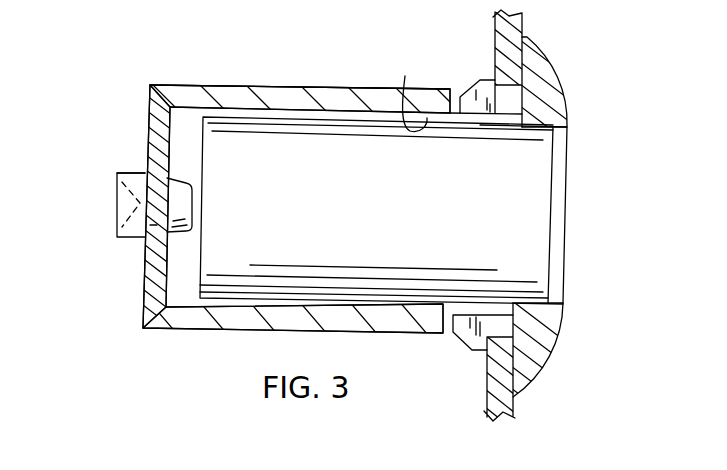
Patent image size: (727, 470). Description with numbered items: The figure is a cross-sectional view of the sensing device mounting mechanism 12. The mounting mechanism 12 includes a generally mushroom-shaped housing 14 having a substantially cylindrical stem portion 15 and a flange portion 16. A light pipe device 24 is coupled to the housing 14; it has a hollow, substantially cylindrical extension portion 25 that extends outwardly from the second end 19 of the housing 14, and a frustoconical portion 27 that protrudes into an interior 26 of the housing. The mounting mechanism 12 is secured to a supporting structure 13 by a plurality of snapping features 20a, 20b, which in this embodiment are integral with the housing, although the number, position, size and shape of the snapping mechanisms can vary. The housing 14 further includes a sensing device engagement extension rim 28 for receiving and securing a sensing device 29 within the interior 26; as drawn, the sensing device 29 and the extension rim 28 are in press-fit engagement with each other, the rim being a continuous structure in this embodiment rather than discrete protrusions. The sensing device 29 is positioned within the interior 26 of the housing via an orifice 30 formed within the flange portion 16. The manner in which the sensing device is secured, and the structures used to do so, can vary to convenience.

The sensing device mounting mechanism 12 is at (112, 119).
The supporting structure 13 is at (516, 21).
The housing 14 is at (328, 88).
The stem portion 15 is at (233, 88).
The flange portion 16 is at (553, 349).
The second end 19 is at (150, 112).
The snapping feature 20a is at (471, 86).
The snapping feature 20b is at (466, 337).
The light pipe device 24 is at (122, 202).
The extension portion 25 is at (130, 173).
The interior 26 is at (194, 286).
The frustoconical portion 27 is at (176, 181).
The sensing device engagement extension rim 28 is at (414, 94).
The sensing device 29 is at (359, 213).
The orifice 30 is at (572, 172).